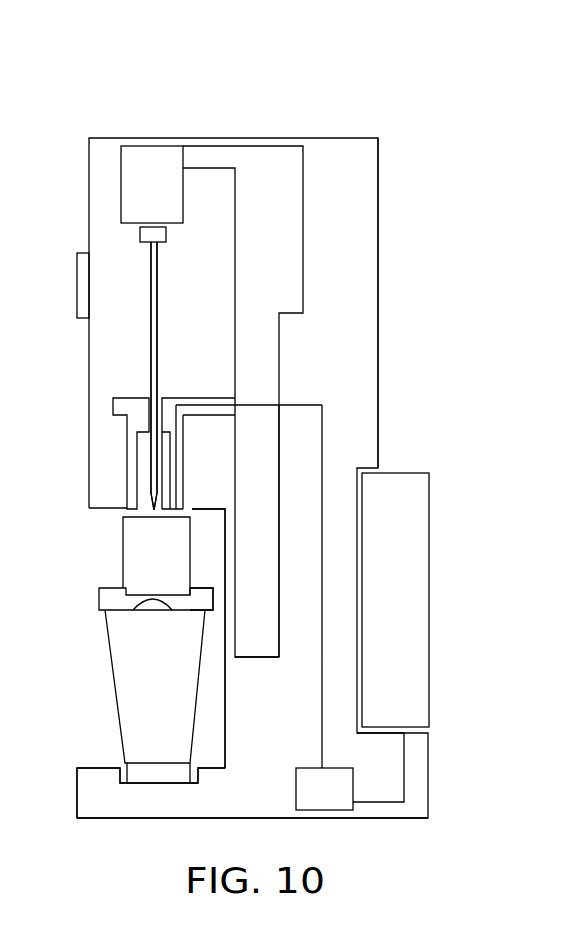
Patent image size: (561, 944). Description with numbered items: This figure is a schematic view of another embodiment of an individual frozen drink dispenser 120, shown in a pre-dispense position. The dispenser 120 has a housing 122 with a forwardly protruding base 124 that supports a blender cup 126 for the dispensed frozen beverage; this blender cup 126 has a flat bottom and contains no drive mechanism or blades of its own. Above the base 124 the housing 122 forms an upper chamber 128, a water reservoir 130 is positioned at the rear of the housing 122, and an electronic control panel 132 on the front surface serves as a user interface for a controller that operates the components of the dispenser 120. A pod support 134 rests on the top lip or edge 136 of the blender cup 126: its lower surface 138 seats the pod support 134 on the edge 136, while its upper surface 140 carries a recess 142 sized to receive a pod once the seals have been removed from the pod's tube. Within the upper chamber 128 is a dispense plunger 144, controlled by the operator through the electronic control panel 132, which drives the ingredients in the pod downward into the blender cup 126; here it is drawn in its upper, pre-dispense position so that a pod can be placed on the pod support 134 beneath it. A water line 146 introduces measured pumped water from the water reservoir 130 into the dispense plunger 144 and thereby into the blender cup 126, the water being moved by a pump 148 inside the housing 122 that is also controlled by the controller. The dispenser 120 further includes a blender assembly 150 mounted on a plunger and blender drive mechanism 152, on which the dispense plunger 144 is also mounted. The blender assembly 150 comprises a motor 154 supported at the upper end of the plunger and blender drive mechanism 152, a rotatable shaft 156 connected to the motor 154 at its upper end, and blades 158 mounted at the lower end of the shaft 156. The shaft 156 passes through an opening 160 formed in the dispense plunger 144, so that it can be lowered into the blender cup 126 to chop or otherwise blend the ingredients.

The individual frozen drink dispenser 120 is at (245, 111).
The housing 122 is at (378, 160).
The base 124 is at (77, 783).
The blender cup 126 is at (118, 722).
The upper chamber 128 is at (100, 152).
The water reservoir 130 is at (429, 492).
The electronic control panel 132 is at (76, 278).
The pod support 134 is at (99, 600).
The top lip or edge 136 is at (133, 611).
The lower surface 138 is at (213, 606).
The upper surface 140 is at (205, 590).
The recess 142 is at (192, 592).
The dispense plunger 144 is at (128, 435).
The water line 146 is at (322, 428).
The pump 148 is at (353, 772).
The blender assembly 150 is at (138, 257).
The plunger and blender drive mechanism 152 is at (305, 273).
The motor 154 is at (121, 194).
The rotatable shaft 156 is at (148, 325).
The blades 158 is at (153, 505).
The opening 160 is at (150, 403).